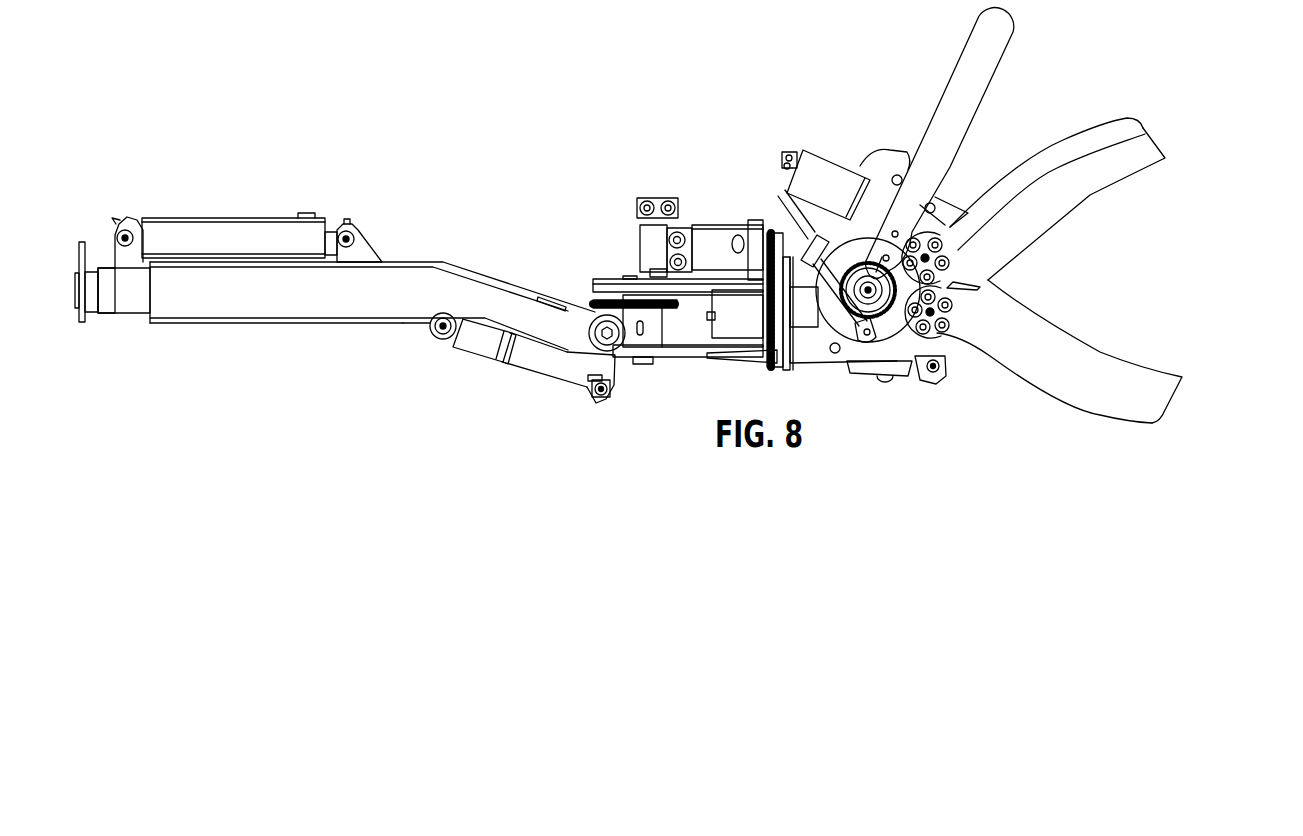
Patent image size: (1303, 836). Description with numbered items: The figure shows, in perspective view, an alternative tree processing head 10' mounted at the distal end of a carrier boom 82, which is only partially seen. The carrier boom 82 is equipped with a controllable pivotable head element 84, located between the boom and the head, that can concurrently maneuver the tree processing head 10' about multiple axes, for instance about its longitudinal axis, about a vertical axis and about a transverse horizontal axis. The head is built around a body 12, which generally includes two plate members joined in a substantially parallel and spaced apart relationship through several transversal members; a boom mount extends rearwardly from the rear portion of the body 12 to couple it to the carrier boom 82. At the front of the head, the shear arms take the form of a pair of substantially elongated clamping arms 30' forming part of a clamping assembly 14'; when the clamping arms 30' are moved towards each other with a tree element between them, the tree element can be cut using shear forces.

The carrier boom 82 is at (407, 282).
The controllable pivotable head element 84 is at (715, 224).
The body 12 is at (887, 158).
The alternative tree processing head 10' is at (1094, 237).
The clamping arms 30' is at (1112, 266).
The clamping assembly 14' is at (1137, 204).